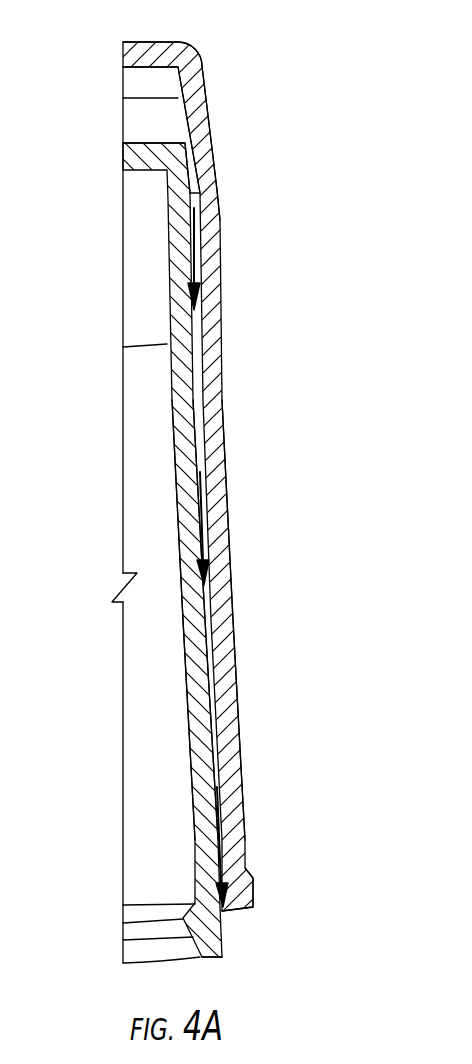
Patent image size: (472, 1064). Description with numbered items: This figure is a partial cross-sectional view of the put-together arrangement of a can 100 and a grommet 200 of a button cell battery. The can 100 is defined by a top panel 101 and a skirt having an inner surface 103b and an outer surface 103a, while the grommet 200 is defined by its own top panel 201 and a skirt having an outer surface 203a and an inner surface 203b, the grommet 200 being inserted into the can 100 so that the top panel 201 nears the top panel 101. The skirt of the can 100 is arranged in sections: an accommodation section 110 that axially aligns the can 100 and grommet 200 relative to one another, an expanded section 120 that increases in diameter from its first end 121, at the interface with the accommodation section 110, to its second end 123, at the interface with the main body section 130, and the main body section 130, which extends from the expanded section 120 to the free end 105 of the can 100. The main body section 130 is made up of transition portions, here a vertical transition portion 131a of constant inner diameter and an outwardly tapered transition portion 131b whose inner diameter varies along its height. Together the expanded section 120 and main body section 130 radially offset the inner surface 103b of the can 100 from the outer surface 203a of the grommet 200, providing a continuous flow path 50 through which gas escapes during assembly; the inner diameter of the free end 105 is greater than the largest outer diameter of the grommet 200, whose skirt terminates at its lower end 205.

The can 100 is at (243, 31).
The top panel of the can 101 is at (138, 42).
The accommodation section 110 is at (235, 61).
The expanded section 120 is at (235, 83).
The first end of the expanded section 121 is at (180, 97).
The second end of the expanded section 123 is at (218, 190).
The main body section 130 is at (325, 187).
The vertical transition portion 131a is at (235, 193).
The outwardly tapered transition portion 131b is at (235, 380).
The outer surface of the can skirt 103a is at (237, 717).
The inner surface of the can skirt 103b is at (182, 115).
The free end of the can 105 is at (245, 914).
The grommet 200 is at (92, 428).
The top panel of the grommet 201 is at (123, 152).
The outer surface of the grommet skirt 203a is at (215, 760).
The inner surface of the grommet skirt 203b is at (187, 700).
The bottom of container wall 205 is at (210, 962).
The flow path 50 is at (203, 515).